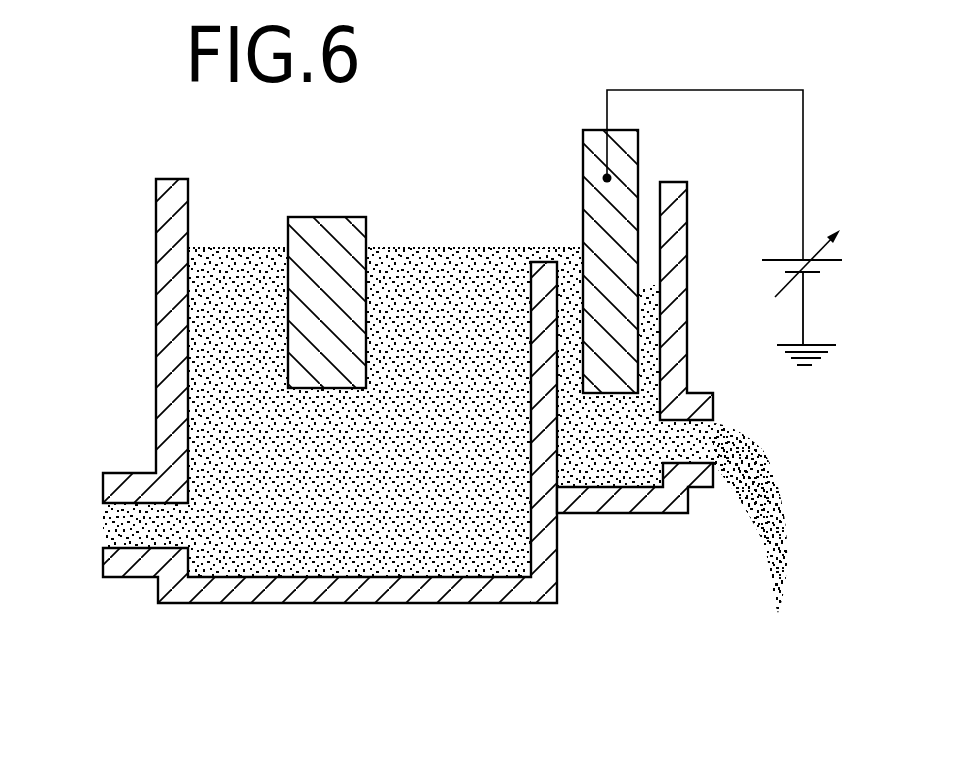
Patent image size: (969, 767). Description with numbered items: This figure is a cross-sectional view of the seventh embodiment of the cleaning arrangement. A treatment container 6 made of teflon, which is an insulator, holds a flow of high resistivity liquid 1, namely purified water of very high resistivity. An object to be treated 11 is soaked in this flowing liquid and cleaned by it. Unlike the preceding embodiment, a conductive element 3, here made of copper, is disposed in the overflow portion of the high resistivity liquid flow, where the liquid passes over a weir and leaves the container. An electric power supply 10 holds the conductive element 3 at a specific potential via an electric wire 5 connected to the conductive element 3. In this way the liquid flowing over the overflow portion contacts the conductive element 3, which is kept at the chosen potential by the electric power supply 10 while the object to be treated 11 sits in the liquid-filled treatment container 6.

The high resistivity liquid 1 is at (120, 527).
The conductive element 3 is at (600, 205).
The electric wire 5 is at (805, 160).
The treatment container 6 is at (176, 366).
The electric power supply 10 is at (828, 272).
The object to be treated 11 is at (325, 248).